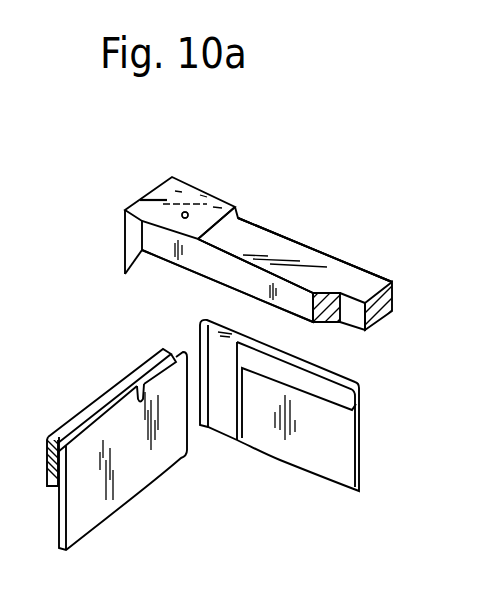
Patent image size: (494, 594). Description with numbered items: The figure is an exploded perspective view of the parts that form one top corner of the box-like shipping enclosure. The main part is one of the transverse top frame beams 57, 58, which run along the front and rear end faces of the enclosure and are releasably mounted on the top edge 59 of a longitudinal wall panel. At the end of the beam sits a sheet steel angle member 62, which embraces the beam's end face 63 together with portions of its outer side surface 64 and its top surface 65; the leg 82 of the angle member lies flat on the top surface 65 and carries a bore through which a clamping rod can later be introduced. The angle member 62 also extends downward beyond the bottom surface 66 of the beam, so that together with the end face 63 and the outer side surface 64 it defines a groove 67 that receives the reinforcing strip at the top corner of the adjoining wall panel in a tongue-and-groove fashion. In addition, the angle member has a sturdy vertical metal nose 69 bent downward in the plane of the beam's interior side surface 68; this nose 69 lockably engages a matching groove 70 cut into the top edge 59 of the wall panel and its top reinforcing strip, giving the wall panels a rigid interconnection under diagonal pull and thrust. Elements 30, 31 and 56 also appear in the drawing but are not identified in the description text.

The bore 30 is at (188, 213).
The bore 31 is at (188, 213).
The slot 56 is at (184, 190).
The front top frame beam 57 is at (383, 311).
The rear top frame beam 58 is at (383, 311).
The top edge 59 is at (72, 420).
The sheet steel angle member 62 is at (148, 197).
The end face 63 is at (140, 249).
The outer side surface 64 is at (279, 234).
The top surface 65 is at (287, 251).
The bottom surface 66 is at (188, 268).
The groove 67 is at (125, 274).
The interior side surface 68 is at (242, 280).
The vertical metal nose 69 is at (125, 219).
The groove 70 is at (133, 385).
The leg 82 is at (236, 207).